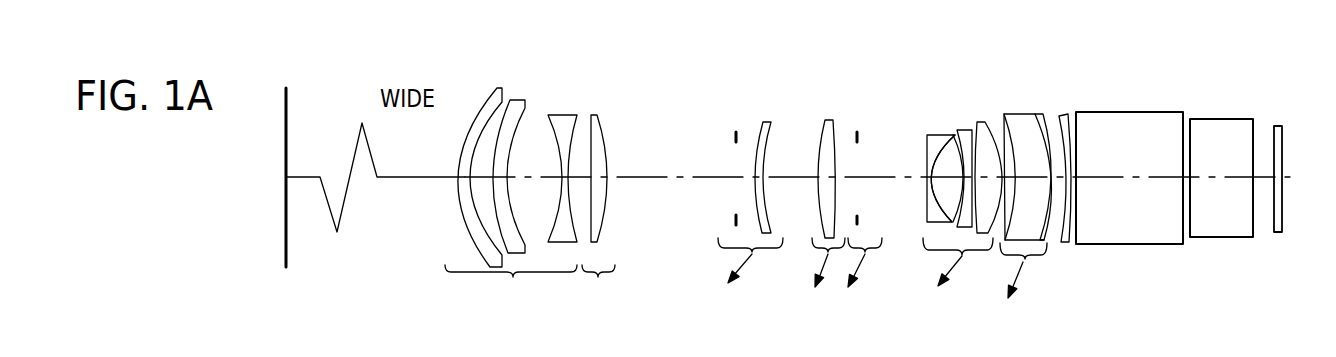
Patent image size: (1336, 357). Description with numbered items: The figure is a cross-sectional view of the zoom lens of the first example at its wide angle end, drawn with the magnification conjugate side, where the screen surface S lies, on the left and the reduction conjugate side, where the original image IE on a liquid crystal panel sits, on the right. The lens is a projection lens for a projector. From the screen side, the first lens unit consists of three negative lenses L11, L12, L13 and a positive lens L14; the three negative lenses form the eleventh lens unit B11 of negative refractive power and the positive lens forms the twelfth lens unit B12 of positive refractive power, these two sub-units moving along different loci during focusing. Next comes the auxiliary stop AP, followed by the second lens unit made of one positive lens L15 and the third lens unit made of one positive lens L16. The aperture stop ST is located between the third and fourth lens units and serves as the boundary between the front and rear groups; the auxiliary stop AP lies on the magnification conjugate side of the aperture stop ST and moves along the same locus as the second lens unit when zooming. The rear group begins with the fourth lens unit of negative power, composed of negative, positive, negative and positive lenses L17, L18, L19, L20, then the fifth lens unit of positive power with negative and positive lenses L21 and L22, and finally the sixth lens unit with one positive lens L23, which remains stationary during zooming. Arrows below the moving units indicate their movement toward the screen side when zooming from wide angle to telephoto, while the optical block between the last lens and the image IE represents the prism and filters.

The screen surface S is at (286, 110).
The negative lens L11 is at (497, 89).
The negative lens L12 is at (518, 102).
The negative lens L13 is at (568, 118).
The positive lens L14 is at (598, 115).
The eleventh lens unit B11 is at (520, 162).
The twelfth lens unit B12 is at (608, 182).
The auxiliary stop AP is at (734, 135).
The positive lens L15 is at (768, 123).
The positive lens L16 is at (832, 120).
The aperture stop ST is at (859, 220).
The negative lens L17 is at (932, 136).
The positive lens L18 is at (948, 137).
The negative lens L19 is at (967, 131).
The positive lens L20 is at (980, 123).
The negative lens L21 is at (1015, 116).
The positive lens L22 is at (1038, 117).
The positive lens L23 is at (1063, 115).
The original image IE is at (1282, 145).